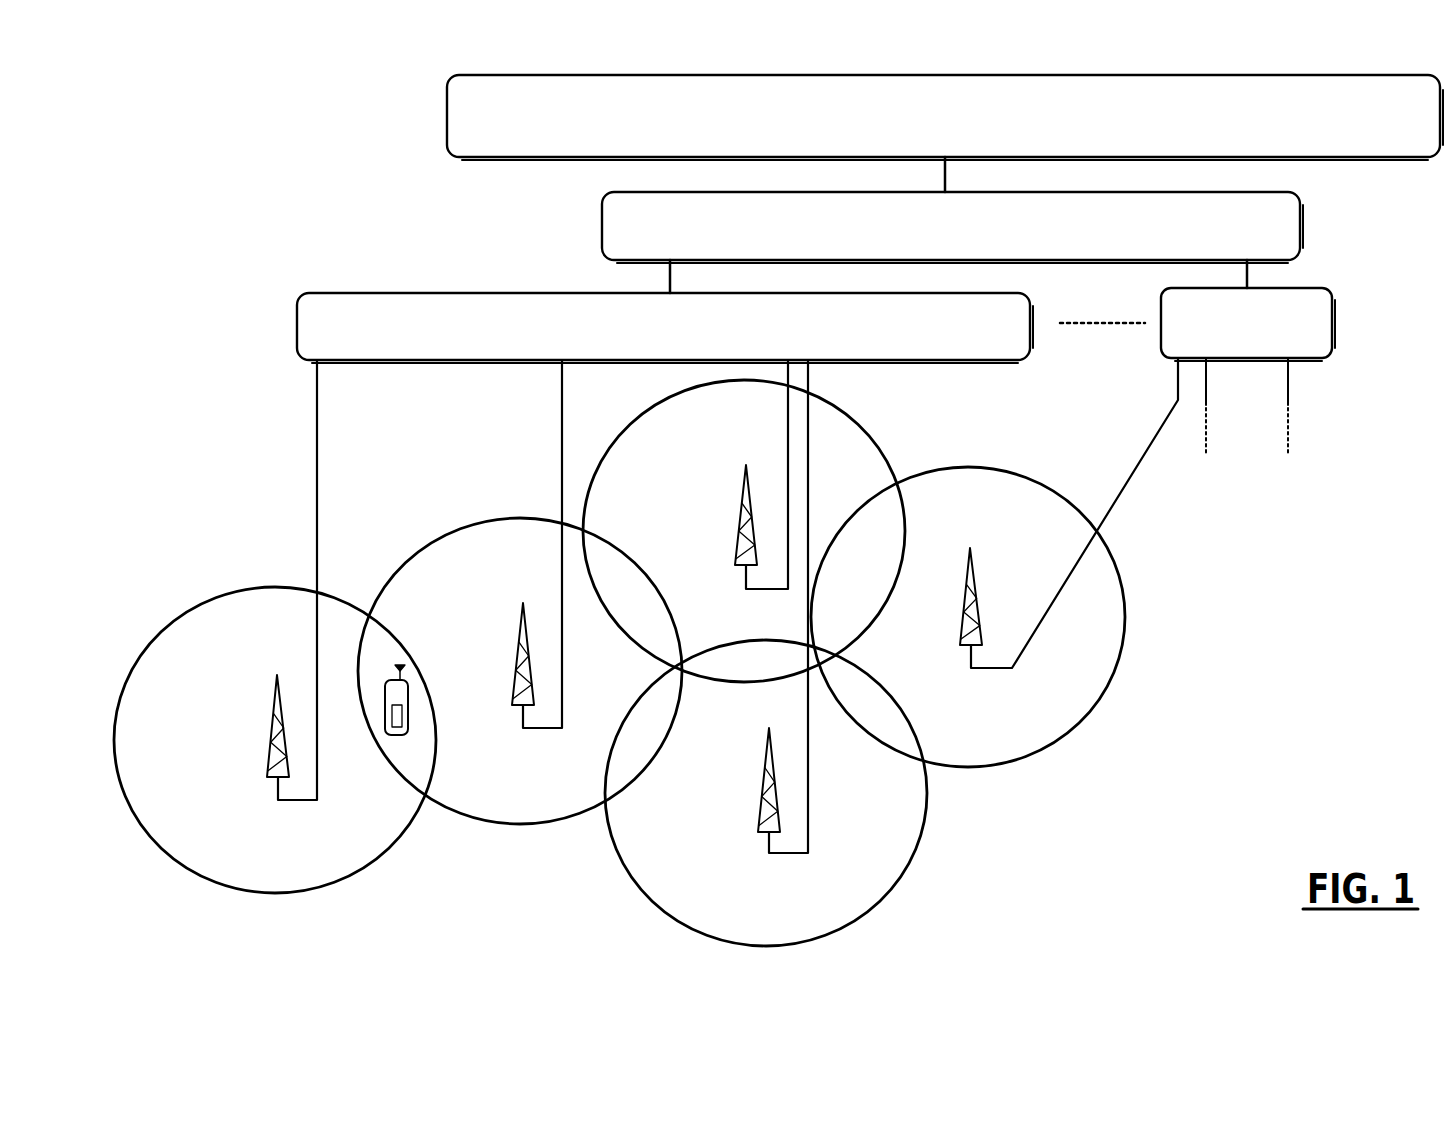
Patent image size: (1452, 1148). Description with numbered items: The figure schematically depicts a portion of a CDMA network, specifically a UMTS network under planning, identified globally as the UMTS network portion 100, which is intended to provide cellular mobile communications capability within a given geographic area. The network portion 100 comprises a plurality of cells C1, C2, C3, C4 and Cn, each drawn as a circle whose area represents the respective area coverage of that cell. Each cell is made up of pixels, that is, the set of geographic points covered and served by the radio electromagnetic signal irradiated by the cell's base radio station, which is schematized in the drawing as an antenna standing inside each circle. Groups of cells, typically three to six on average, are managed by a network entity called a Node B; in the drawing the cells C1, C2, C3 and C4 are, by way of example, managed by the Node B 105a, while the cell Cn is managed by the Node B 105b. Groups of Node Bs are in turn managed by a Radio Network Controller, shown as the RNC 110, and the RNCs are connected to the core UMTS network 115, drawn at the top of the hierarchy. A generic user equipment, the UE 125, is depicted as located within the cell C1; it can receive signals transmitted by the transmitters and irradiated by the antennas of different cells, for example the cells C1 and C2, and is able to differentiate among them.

The UMTS network portion 100 is at (226, 142).
The core UMTS network 115 is at (957, 124).
The Radio Network Controller (RNC) 110 is at (1146, 237).
The Node B 105a is at (846, 343).
The Node B 105b is at (1328, 360).
The UE 125 is at (388, 680).
The cell C1 is at (390, 843).
The cell C2 is at (470, 523).
The cell C3 is at (915, 828).
The cell C4 is at (862, 465).
The cell Cn is at (1112, 682).